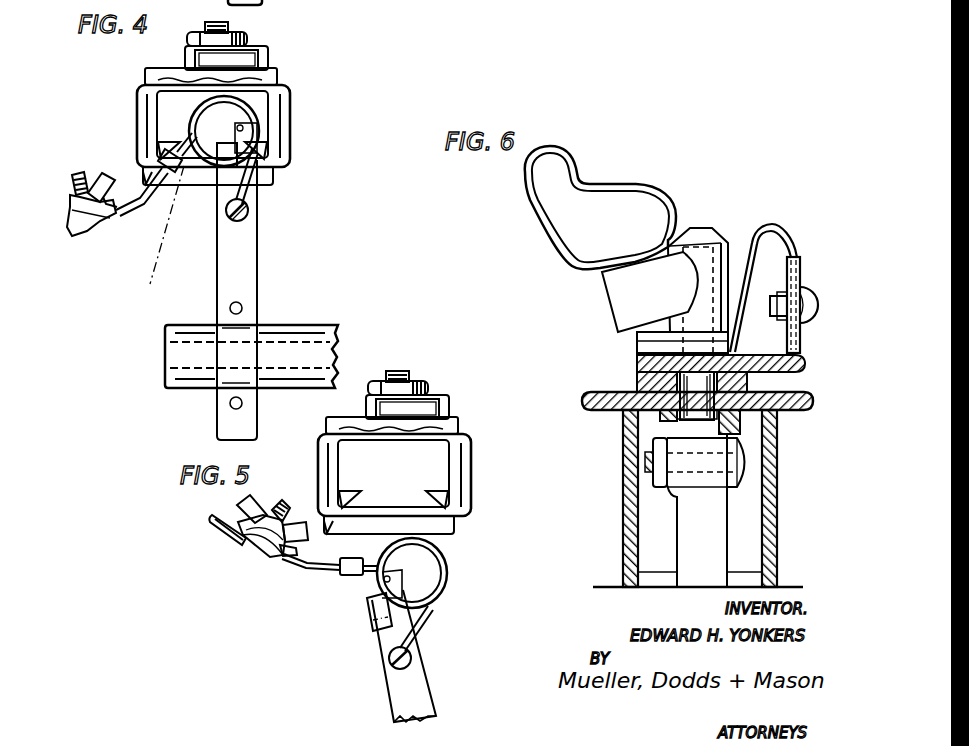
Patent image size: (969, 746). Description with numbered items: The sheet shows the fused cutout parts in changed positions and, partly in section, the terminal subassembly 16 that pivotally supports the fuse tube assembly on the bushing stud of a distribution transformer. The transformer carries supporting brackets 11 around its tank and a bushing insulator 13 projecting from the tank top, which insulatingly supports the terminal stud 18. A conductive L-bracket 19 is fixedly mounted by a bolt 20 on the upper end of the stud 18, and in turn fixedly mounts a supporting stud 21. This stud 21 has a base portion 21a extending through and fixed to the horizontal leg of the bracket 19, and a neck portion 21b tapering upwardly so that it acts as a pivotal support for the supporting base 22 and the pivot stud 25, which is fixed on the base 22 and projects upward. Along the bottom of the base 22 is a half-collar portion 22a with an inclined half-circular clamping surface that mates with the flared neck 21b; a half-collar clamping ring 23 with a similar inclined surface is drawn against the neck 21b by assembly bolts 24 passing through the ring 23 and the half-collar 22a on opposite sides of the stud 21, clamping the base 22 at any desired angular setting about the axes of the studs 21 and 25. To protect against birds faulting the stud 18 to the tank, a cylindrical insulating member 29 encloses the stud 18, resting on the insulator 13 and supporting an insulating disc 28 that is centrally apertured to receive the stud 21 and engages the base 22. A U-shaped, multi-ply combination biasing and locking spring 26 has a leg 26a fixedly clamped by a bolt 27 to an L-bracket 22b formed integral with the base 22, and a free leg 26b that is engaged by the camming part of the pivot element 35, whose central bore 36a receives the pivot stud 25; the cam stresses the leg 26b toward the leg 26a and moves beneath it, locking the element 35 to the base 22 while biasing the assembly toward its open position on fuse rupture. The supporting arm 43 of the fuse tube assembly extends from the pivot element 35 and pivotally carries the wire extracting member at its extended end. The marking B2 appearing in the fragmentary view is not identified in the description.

In FIG. 4, the supporting arm 43 is at (250, 253).
In FIG. 4, the burner assembly B2 is at (151, 225).
In FIG. 6, the supporting brackets 11 is at (606, 316).
In FIG. 6, the bushing insulator 13 is at (735, 582).
In FIG. 6, the terminal subassembly 16 is at (602, 372).
In FIG. 6, the terminal stud 18 is at (715, 523).
In FIG. 6, the conductive L-bracket 19 is at (740, 434).
In FIG. 6, the bolt 20 is at (742, 464).
In FIG. 6, the supporting stud 21 is at (718, 414).
In FIG. 6, the base portion 21a is at (672, 420).
In FIG. 6, the neck portion 21b is at (722, 380).
In FIG. 6, the supporting base 22 is at (808, 358).
In FIG. 6, the half-collar portion 22a is at (745, 378).
In FIG. 6, the L-bracket 22b is at (800, 272).
In FIG. 6, the half-collar clamping ring 23 is at (638, 372).
In FIG. 6, the assembly bolts 24 is at (640, 383).
In FIG. 6, the pivot stud 25 is at (730, 252).
In FIG. 6, the combination biasing and locking spring 26 is at (796, 240).
In FIG. 6, the spring leg 26a is at (783, 348).
In FIG. 6, the spring leg 26b is at (741, 330).
In FIG. 6, the bolt 27 is at (812, 296).
In FIG. 6, the insulating disc 28 is at (592, 400).
In FIG. 6, the cylindrical insulating member 29 is at (624, 502).
In FIG. 6, the pivot element 35 is at (689, 229).
In FIG. 6, the central bore 36a is at (740, 255).